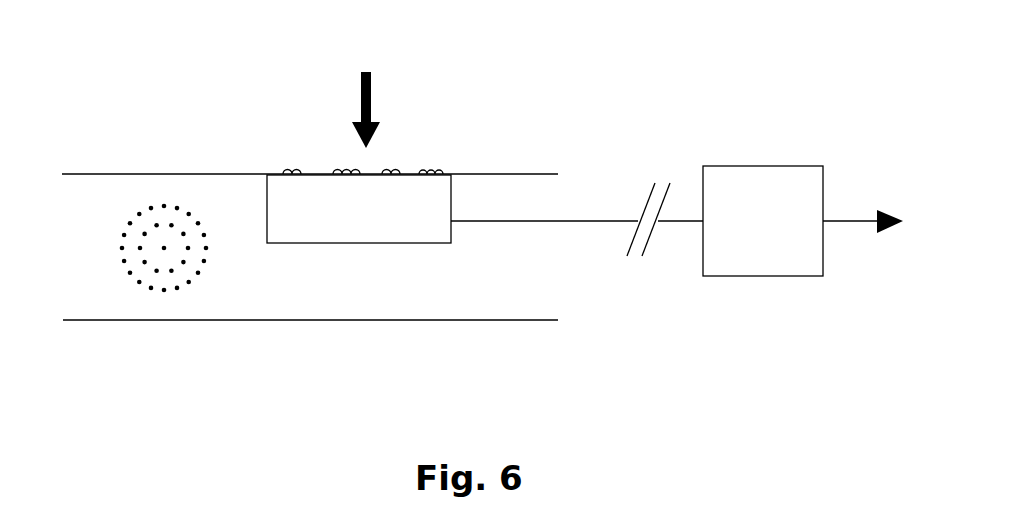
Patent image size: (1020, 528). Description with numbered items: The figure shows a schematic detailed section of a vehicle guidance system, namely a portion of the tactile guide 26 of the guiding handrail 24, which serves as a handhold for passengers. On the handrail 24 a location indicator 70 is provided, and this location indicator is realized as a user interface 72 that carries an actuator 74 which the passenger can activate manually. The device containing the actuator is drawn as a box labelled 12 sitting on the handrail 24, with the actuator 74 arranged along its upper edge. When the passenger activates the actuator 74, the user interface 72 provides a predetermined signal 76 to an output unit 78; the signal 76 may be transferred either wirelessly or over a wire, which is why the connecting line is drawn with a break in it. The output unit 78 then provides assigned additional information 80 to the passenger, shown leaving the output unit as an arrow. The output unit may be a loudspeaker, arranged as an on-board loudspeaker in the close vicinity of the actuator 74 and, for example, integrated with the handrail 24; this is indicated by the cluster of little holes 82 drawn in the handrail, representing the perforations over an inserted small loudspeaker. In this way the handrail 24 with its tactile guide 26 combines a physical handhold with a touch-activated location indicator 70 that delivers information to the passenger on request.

The sensor device 12 is at (359, 209).
The handrail 24 is at (90, 158).
The tactile guide 26 is at (190, 157).
The location indicator 70 is at (305, 243).
The user interface 72 is at (411, 300).
The actuator 74 is at (440, 192).
The signal 76 is at (482, 221).
The output unit 78 is at (757, 166).
The additional information 80 is at (865, 222).
The little holes 82 is at (164, 290).